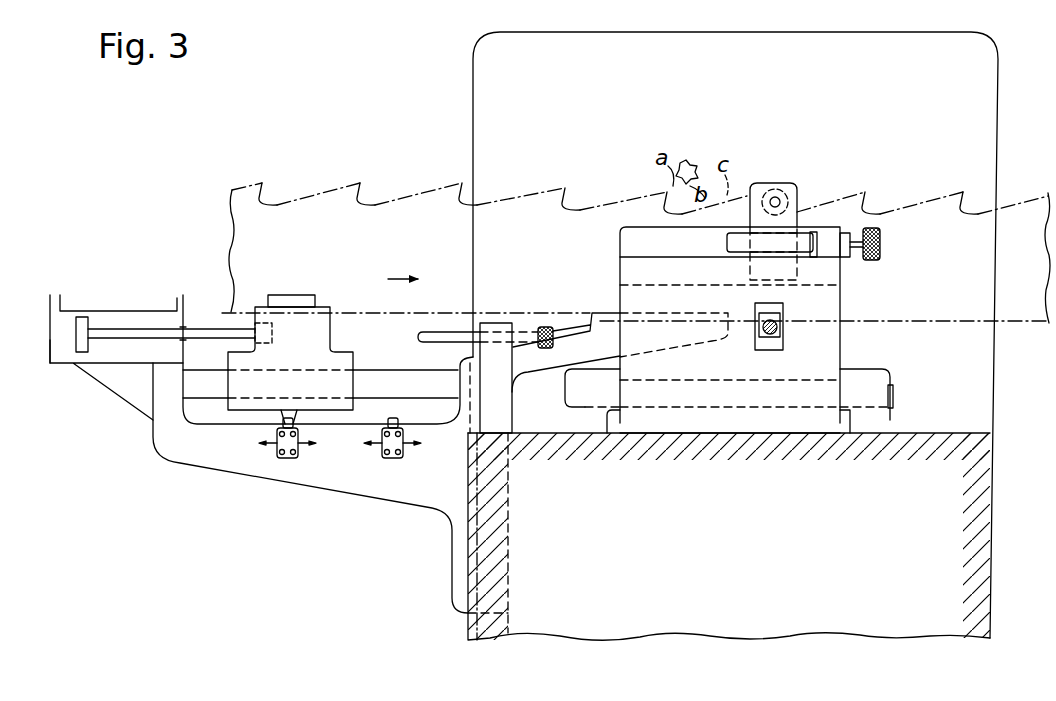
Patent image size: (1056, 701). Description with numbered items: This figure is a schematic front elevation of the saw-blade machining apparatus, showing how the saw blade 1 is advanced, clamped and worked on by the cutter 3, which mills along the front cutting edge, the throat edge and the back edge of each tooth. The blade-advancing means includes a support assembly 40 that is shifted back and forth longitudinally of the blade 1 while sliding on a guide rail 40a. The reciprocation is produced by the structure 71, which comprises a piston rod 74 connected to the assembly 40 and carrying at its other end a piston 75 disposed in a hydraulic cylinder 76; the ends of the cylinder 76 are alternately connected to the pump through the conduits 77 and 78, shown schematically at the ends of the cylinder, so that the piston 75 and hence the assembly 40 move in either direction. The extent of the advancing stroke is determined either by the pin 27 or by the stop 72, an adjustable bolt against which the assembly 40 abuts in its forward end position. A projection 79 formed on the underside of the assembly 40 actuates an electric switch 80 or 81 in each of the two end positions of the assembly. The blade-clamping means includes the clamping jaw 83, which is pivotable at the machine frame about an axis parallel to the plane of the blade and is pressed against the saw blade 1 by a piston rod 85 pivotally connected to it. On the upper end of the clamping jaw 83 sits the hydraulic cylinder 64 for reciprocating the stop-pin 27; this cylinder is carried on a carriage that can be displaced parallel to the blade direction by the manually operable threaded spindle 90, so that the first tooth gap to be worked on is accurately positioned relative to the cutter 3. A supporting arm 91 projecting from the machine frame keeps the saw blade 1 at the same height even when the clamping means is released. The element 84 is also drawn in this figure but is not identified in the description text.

The saw blade 1 is at (317, 212).
The cutter 3 is at (683, 162).
The hydraulic cylinder 64 is at (757, 218).
The pin 27 is at (776, 200).
The threaded spindle 90 is at (875, 228).
The stop 72 is at (448, 337).
The conduit 77 is at (55, 274).
The piston 75 is at (80, 325).
The piston rod 74 is at (126, 333).
The conduit 78 is at (181, 292).
The hydraulic cylinder 76 is at (57, 349).
The structure 71 is at (121, 385).
The guide rail 40a is at (205, 386).
The support assembly 40 is at (248, 405).
The electric switch 80 is at (289, 450).
The projection 79 is at (288, 407).
The electric switch 81 is at (393, 450).
The supporting arm 91 is at (560, 355).
The piston rod 85 is at (778, 323).
The clamping jaw 83 is at (823, 337).
The cylinder 84 is at (865, 390).